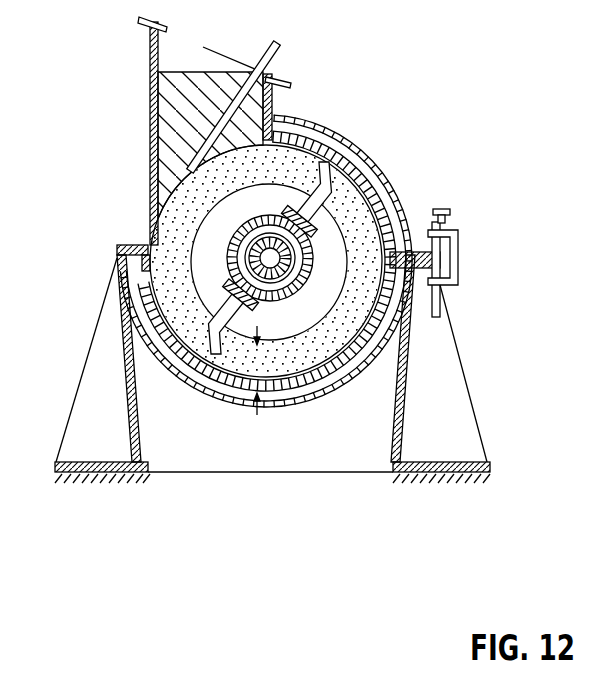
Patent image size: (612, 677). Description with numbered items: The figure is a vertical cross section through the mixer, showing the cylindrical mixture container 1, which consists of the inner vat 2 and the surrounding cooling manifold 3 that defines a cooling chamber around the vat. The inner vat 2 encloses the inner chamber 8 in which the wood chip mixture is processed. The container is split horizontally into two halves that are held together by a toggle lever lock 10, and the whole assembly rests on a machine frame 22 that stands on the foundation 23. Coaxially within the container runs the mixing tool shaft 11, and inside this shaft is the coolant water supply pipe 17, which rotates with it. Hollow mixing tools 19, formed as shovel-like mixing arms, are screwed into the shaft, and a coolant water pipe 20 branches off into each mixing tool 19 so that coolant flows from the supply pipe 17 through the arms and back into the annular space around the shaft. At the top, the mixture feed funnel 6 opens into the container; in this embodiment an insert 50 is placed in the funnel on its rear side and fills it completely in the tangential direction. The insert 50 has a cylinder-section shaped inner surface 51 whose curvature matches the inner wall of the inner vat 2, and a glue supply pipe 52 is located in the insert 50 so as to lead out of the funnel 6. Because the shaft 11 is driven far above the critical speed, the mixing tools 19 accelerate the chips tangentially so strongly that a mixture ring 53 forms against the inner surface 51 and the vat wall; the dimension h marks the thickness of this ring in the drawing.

The mixture container 1 is at (390, 160).
The inner vat 2 is at (360, 160).
The cooling manifold 3 is at (338, 132).
The mixture feed funnel 6 is at (150, 130).
The inner chamber 8 is at (330, 213).
The toggle lever lock 10 is at (460, 250).
The mixing tool shaft 11 is at (297, 283).
The coolant water supply pipe 17 is at (250, 258).
The mixing tool 19 is at (322, 218).
The coolant water pipe 20 is at (272, 221).
The machine frame 22 is at (73, 440).
The foundation 23 is at (95, 483).
The insert 50 is at (182, 87).
The inner surface 51 is at (160, 238).
The glue supply pipe 52 is at (272, 102).
The mixture ring 53 is at (325, 358).
The layer height h is at (259, 370).